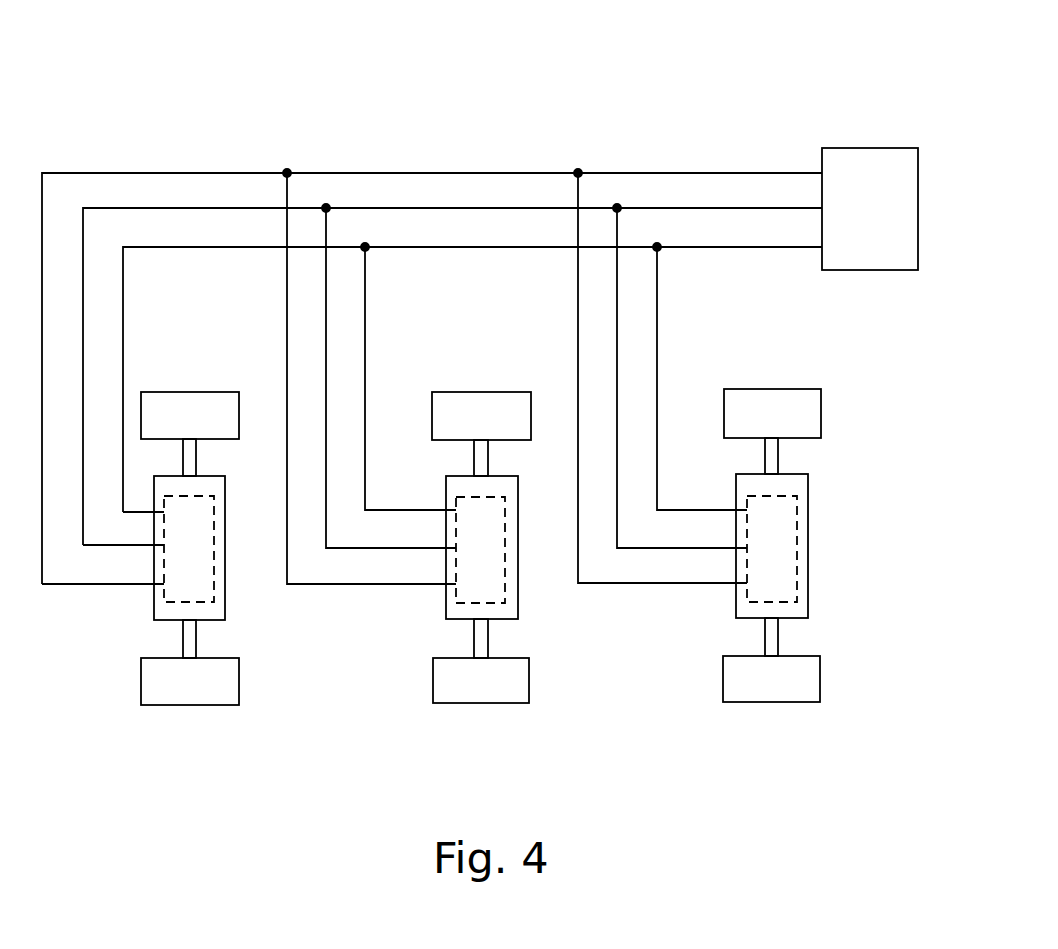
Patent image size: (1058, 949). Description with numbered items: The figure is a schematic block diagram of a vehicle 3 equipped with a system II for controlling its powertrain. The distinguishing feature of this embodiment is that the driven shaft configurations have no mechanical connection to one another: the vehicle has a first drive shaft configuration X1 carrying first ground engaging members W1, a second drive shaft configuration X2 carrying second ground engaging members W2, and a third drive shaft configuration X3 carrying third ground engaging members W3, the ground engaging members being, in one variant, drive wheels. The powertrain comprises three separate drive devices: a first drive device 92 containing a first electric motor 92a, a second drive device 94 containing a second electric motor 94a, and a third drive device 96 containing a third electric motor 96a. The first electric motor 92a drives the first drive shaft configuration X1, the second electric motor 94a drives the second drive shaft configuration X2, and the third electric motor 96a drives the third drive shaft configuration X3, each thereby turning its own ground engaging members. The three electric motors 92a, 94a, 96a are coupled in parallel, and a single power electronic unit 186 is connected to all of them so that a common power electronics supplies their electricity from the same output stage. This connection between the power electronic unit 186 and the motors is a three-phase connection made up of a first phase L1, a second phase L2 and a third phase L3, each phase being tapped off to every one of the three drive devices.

The system for controlling the powertrain II is at (254, 72).
The vehicle 3 is at (626, 772).
The power electronic unit 186 is at (889, 221).
The first phase L1 is at (636, 173).
The second phase L2 is at (685, 208).
The third phase L3 is at (724, 247).
The first ground engaging members W1 is at (189, 392).
The second ground engaging members W2 is at (480, 392).
The third ground engaging members W3 is at (772, 389).
The first drive shaft configuration X1 is at (196, 463).
The second drive shaft configuration X2 is at (474, 448).
The third drive shaft configuration X3 is at (765, 448).
The first drive device 92 is at (236, 608).
The first electric motor 92a is at (214, 558).
The second drive device 94 is at (529, 608).
The second electric motor 94a is at (505, 558).
The third drive device 96 is at (819, 608).
The third electric motor 96a is at (797, 558).